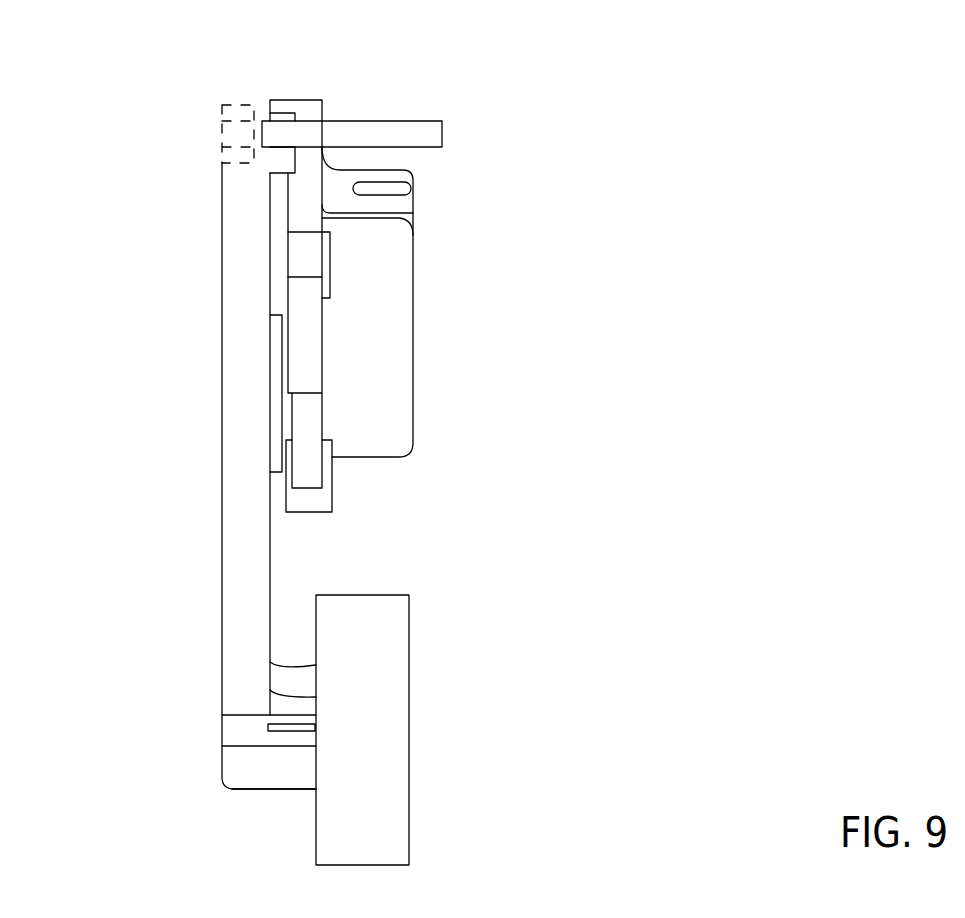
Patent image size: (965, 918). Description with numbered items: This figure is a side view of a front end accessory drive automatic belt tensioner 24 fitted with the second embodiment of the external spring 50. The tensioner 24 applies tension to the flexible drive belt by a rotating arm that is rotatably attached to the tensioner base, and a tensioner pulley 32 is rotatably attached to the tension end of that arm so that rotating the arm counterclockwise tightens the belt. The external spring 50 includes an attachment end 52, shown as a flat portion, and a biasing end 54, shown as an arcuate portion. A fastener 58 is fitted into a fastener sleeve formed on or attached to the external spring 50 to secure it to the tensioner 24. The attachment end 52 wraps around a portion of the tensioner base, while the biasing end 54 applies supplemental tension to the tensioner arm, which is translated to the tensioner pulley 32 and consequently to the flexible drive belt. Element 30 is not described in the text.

The tensioner 24 is at (237, 777).
The bracket 30 is at (387, 265).
The tensioner pulley 32 is at (382, 737).
The external spring 50 is at (225, 290).
The attachment end 52 is at (250, 102).
The biasing end 54 is at (247, 697).
The fastener 58 is at (287, 122).